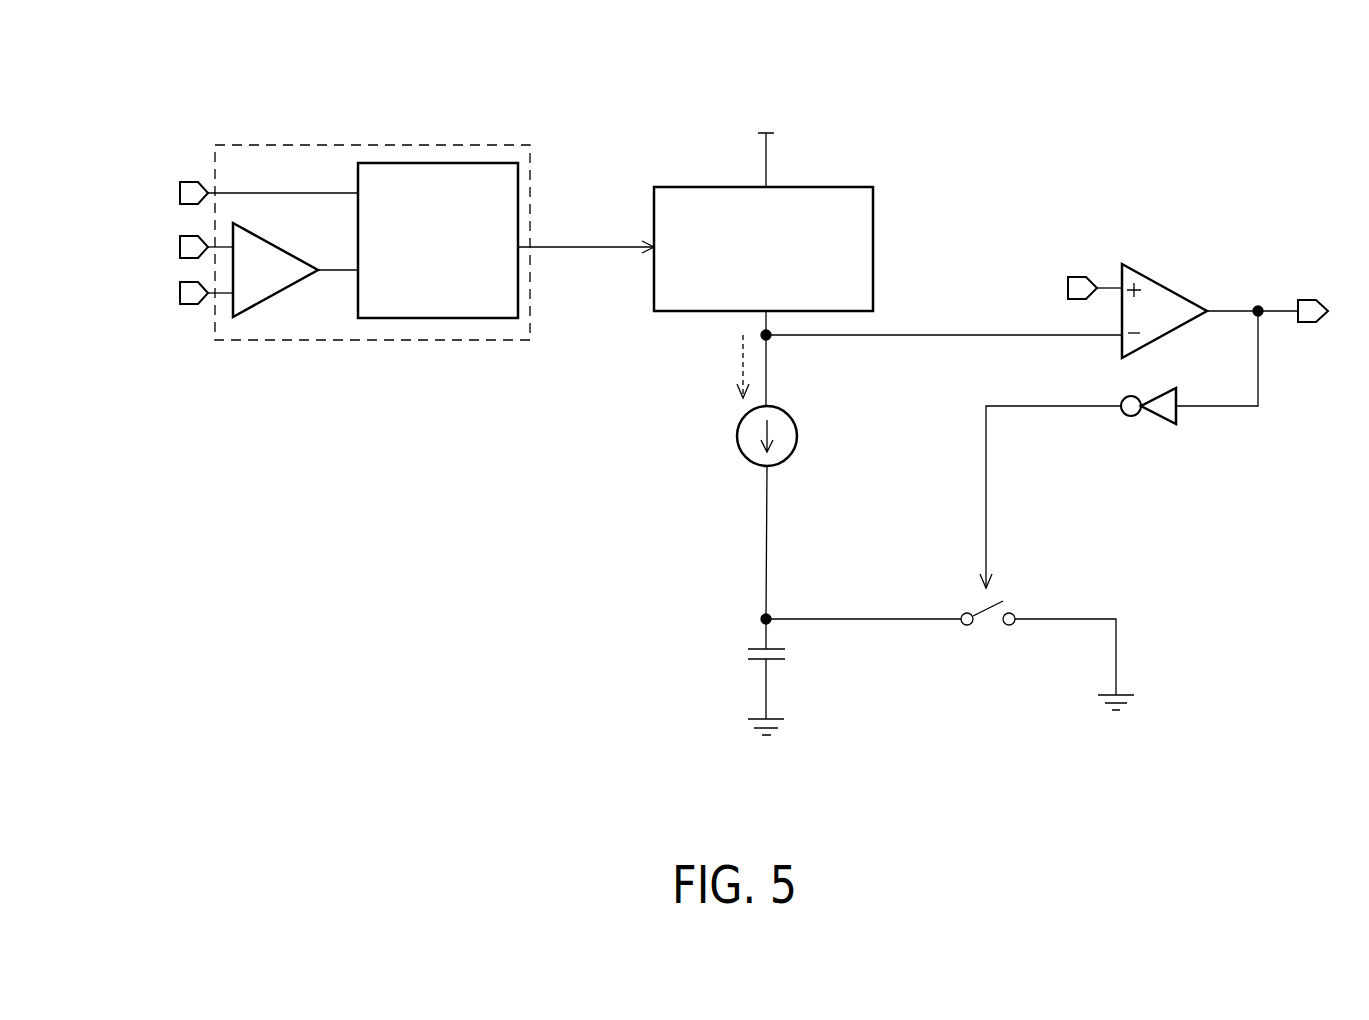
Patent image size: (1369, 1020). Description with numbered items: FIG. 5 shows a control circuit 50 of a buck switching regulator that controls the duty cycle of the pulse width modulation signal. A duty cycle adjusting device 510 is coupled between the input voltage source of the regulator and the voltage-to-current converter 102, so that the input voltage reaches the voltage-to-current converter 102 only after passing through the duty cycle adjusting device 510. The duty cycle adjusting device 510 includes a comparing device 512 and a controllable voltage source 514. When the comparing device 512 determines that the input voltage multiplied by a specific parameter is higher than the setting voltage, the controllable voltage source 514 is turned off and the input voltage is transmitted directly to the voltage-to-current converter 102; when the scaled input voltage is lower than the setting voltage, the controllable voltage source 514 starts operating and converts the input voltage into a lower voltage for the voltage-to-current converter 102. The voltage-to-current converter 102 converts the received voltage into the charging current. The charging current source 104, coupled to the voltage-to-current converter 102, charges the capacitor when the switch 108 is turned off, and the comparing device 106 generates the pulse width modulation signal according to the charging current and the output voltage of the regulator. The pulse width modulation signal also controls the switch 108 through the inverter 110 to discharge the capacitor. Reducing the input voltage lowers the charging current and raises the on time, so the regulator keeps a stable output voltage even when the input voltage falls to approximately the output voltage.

The control circuit 50 is at (1220, 107).
The voltage-to-current converter 102 is at (845, 187).
The charging current source 104 is at (797, 436).
The comparing device 106 is at (1160, 280).
The switch 108 is at (985, 628).
The inverter 110 is at (1160, 424).
The duty cycle adjusting device 510 is at (342, 342).
The comparing device 512 is at (272, 306).
The controllable voltage source 514 is at (478, 318).